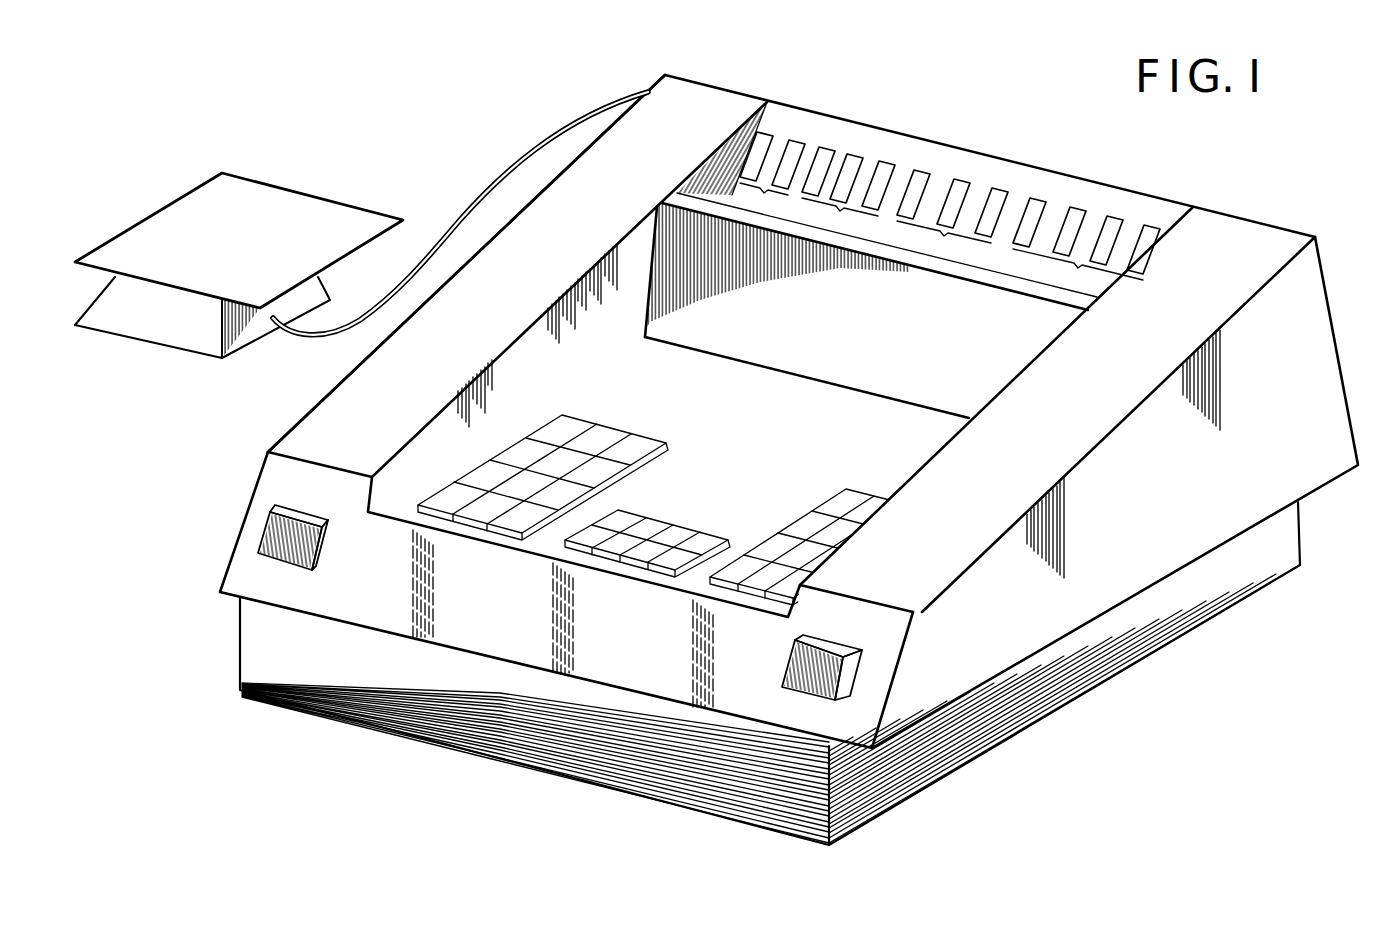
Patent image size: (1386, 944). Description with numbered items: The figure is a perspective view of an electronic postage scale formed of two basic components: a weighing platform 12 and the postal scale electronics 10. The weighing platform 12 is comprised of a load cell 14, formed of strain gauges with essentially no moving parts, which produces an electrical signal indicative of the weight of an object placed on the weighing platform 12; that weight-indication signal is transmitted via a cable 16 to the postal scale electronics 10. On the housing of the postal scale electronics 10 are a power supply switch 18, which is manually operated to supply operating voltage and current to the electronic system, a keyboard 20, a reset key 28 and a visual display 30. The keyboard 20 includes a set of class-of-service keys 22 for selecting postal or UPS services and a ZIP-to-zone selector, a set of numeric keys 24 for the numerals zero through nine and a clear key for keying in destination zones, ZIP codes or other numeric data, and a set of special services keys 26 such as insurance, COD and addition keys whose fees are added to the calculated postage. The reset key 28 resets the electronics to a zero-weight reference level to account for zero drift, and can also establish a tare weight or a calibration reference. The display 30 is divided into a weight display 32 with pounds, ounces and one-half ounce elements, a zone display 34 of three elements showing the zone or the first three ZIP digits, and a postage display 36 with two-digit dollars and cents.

The postal scale electronics 10 is at (253, 434).
The weighing platform 12 is at (312, 204).
The load cell 14 is at (153, 333).
The cable 16 is at (530, 157).
The power supply switch 18 is at (793, 678).
The keyboard 20 is at (776, 447).
The class-of-service keys 22 is at (653, 408).
The numeric keys 24 is at (873, 490).
The special services keys 26 is at (712, 530).
The reset key 28 is at (320, 543).
The visual display 30 is at (970, 173).
The weight display elements 32 is at (823, 212).
The zone display elements 34 is at (907, 230).
The postage display elements 36 is at (1023, 260).